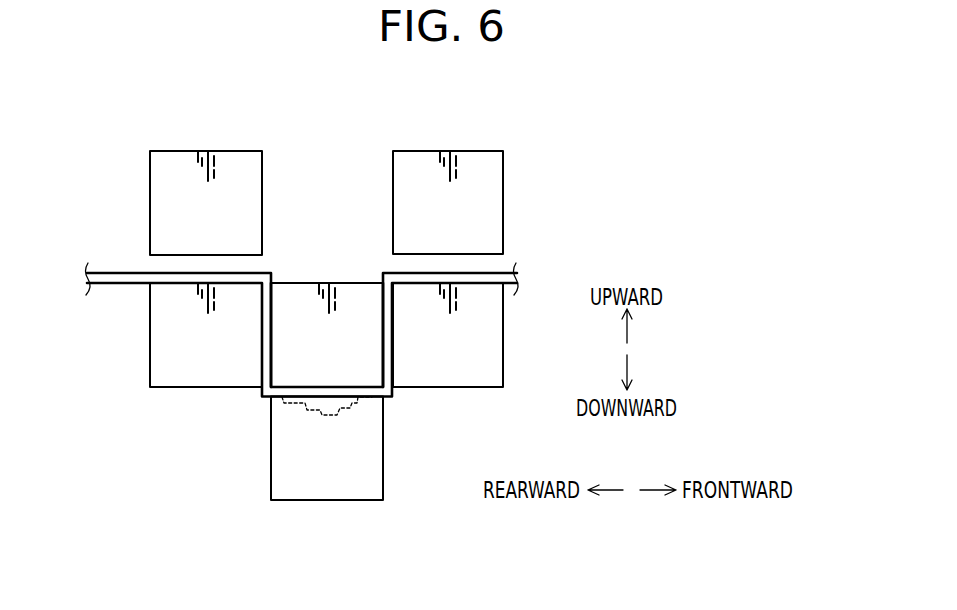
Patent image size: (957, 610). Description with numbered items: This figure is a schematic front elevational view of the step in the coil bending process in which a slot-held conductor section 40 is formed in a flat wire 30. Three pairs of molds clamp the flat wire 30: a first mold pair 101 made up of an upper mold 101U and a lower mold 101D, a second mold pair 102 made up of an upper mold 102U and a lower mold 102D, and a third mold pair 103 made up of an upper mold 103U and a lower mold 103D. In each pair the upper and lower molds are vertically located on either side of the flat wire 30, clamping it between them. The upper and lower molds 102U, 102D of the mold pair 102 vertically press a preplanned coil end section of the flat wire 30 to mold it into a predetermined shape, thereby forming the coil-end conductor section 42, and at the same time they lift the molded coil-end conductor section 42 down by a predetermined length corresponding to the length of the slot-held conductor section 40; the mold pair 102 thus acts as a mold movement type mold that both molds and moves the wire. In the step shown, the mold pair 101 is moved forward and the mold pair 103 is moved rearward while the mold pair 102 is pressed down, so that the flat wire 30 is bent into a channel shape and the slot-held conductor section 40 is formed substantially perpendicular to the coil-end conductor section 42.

The flat wire 30 is at (116, 283).
The slot-held conductor section 40 is at (268, 306).
The coil-end conductor section 42 is at (480, 282).
The mold pair 101 is at (206, 236).
The upper mold 101U is at (163, 207).
The lower mold 101D is at (163, 338).
The mold pair 102 is at (327, 425).
The upper mold 102U is at (283, 338).
The lower mold 102D is at (313, 515).
The mold pair 103 is at (448, 235).
The upper mold 103U is at (407, 208).
The lower mold 103D is at (407, 338).